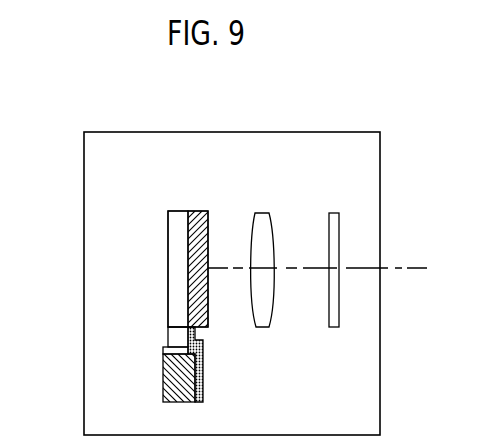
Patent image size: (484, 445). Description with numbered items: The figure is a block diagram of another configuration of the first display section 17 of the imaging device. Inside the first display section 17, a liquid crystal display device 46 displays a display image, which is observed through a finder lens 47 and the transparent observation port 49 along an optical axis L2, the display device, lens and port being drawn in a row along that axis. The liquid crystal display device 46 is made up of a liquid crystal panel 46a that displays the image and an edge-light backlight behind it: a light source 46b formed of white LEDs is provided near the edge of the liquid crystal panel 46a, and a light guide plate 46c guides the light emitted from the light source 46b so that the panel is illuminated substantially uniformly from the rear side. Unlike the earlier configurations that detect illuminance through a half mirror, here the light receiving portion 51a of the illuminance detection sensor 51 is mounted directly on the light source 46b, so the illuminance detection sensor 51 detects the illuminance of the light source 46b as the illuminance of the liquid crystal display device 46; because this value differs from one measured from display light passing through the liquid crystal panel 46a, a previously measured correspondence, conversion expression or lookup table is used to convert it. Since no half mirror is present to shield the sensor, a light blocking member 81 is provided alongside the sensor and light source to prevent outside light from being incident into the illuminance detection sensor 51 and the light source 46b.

The first display section 17 is at (84, 170).
The liquid crystal display device 46 is at (188, 211).
The liquid crystal panel 46a is at (209, 212).
The light source 46b is at (172, 340).
The light guide plate 46c is at (174, 241).
The finder lens 47 is at (264, 216).
The observation port 49 is at (333, 216).
The illuminance detection sensor 51 is at (166, 394).
The light receiving portion 51a is at (166, 349).
The light blocking member 81 is at (203, 392).
The optical axis L2 is at (415, 268).